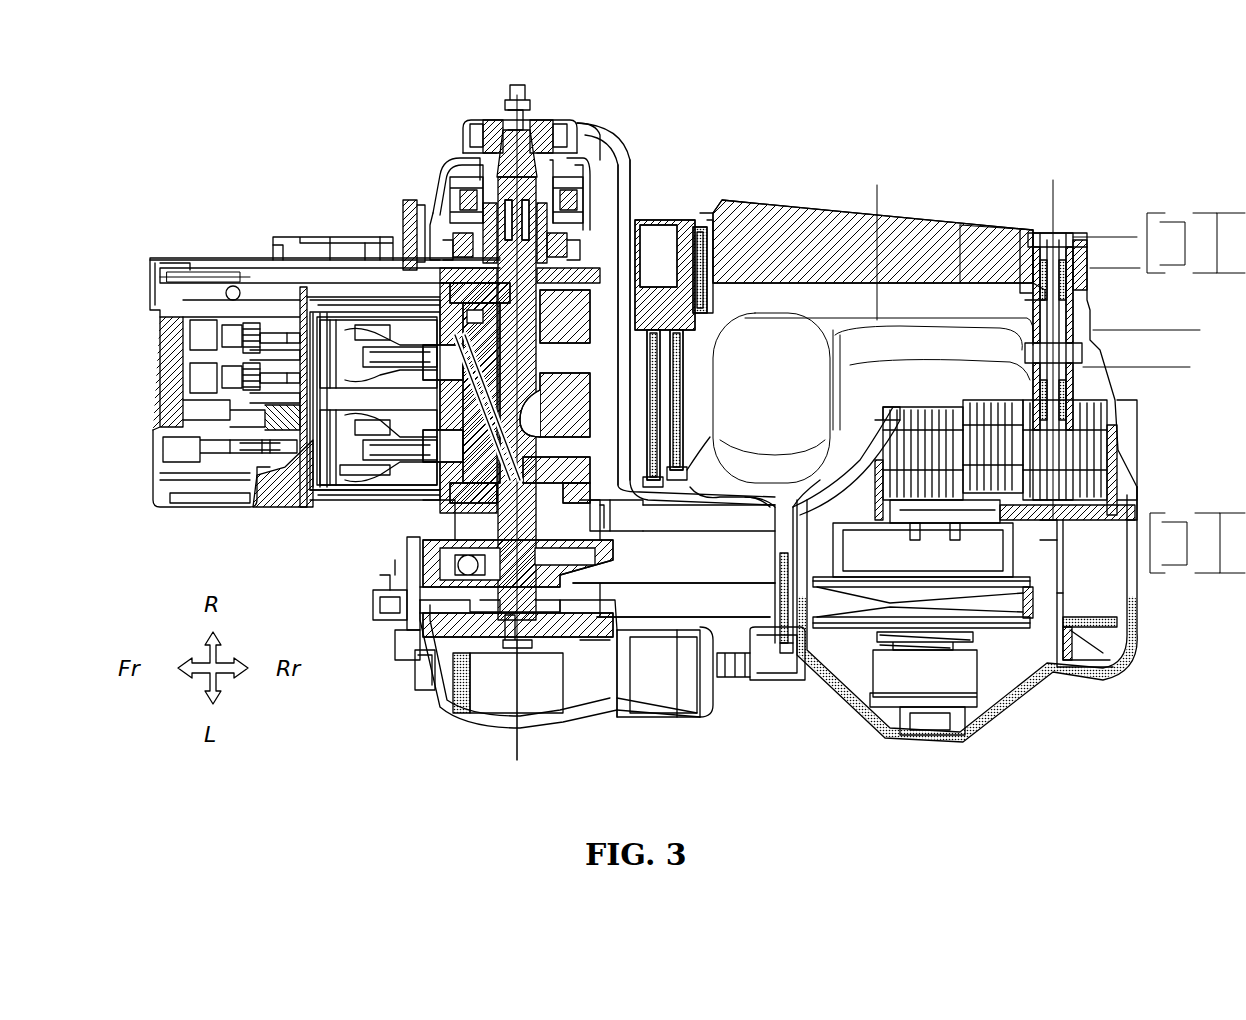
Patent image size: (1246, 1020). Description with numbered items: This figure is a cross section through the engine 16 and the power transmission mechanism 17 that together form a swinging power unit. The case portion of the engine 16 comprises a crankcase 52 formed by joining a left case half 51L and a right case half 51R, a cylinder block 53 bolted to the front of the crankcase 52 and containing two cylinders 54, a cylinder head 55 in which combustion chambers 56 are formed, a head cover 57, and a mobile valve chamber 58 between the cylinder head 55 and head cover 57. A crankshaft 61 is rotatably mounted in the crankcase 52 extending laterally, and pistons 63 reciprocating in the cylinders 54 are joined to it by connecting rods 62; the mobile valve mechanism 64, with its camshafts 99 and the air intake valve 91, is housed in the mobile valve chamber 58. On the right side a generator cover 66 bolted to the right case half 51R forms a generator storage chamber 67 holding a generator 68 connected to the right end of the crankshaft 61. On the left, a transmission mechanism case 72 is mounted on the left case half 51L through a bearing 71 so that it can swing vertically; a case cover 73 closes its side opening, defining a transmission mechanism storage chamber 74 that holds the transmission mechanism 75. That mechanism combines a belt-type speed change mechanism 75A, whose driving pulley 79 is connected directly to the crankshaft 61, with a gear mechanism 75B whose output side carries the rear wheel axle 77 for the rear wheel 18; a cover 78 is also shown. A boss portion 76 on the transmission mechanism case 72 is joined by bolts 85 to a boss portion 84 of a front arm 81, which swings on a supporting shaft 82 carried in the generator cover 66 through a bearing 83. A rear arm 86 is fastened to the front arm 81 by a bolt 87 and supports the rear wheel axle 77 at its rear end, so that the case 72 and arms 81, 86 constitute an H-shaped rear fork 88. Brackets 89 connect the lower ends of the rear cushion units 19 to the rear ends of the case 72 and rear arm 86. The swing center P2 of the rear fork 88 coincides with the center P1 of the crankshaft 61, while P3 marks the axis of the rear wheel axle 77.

The engine 16 is at (249, 157).
The power transmission mechanism 17 is at (437, 718).
The rear wheel 18 is at (875, 220).
The rear cushion unit 19 is at (1200, 213).
The right case half 51R is at (690, 220).
The left case half 51L is at (625, 500).
The crankcase 52 is at (660, 285).
The cylinder block 53 is at (345, 237).
The cylinder 54 is at (405, 230).
The cylinder head 55 is at (252, 260).
The combustion chamber 56 is at (370, 345).
The head cover 57 is at (175, 258).
The mobile valve chamber 58 is at (163, 417).
The crankshaft 61 is at (537, 355).
The connecting rod 62 is at (410, 350).
The piston 63 is at (360, 395).
The mobile valve mechanism 64 is at (185, 380).
The generator cover 66 is at (600, 160).
The generator storage chamber 67 is at (437, 200).
The generator 68 is at (450, 180).
The bearing 71 is at (674, 602).
The transmission mechanism case 72 is at (400, 560).
The case cover 73 is at (417, 665).
The transmission mechanism storage chamber 74 is at (737, 616).
The transmission mechanism 75 is at (1093, 747).
The belt-type speed change mechanism 75A is at (995, 645).
The gear mechanism 75B is at (1118, 665).
The boss portion 76 is at (710, 410).
The rear wheel axle 77 is at (1085, 310).
The cover 78 is at (635, 722).
The driving pulley 79 is at (407, 630).
The front arm 81 is at (640, 175).
The supporting shaft 82 is at (525, 105).
The bearing 83 is at (597, 125).
The boss portion 84 is at (700, 325).
The bolt 85 is at (700, 448).
The rear arm 86 is at (960, 225).
The bolt 87 is at (795, 225).
The rear fork 88 is at (938, 187).
The bracket 89 is at (1152, 213).
The air intake valve 91 is at (300, 313).
The camshaft 99 is at (160, 330).
The center of the crankshaft P1 is at (545, 420).
The center of the swinging motion of the rear fork P2 is at (520, 755).
The output shaft axis P3 is at (1058, 180).